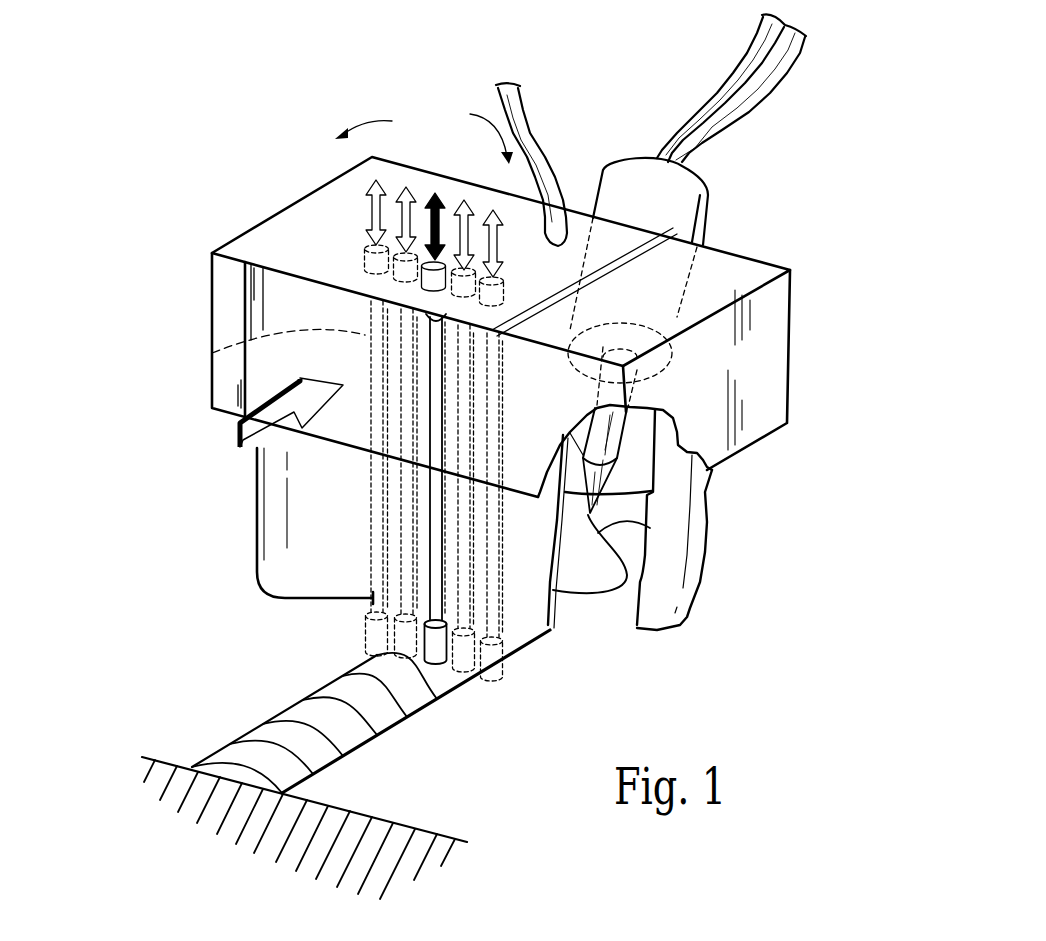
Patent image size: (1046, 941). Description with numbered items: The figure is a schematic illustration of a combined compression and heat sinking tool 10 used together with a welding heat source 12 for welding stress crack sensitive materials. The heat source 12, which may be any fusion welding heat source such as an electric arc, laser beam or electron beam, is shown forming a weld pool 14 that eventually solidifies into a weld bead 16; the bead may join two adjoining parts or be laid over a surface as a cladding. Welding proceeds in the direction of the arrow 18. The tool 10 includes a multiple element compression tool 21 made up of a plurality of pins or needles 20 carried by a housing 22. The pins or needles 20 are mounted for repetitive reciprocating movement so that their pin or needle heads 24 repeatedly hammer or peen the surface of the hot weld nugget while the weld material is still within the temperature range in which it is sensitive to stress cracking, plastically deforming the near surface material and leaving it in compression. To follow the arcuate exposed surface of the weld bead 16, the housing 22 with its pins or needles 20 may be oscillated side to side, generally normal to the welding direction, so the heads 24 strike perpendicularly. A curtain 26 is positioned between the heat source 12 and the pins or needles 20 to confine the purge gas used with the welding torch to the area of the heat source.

The combined compression and heat sinking tool 10 is at (78, 265).
The welding heat source 12 is at (764, 183).
The weld pool 14 is at (581, 585).
The weld bead 16 is at (320, 705).
The arrow 18 is at (238, 440).
The pins or needles 20 is at (437, 593).
The multiple element compression tool 21 is at (212, 352).
The housing 22 is at (290, 203).
The pin or needle heads 24 is at (435, 652).
The curtain 26 is at (275, 540).